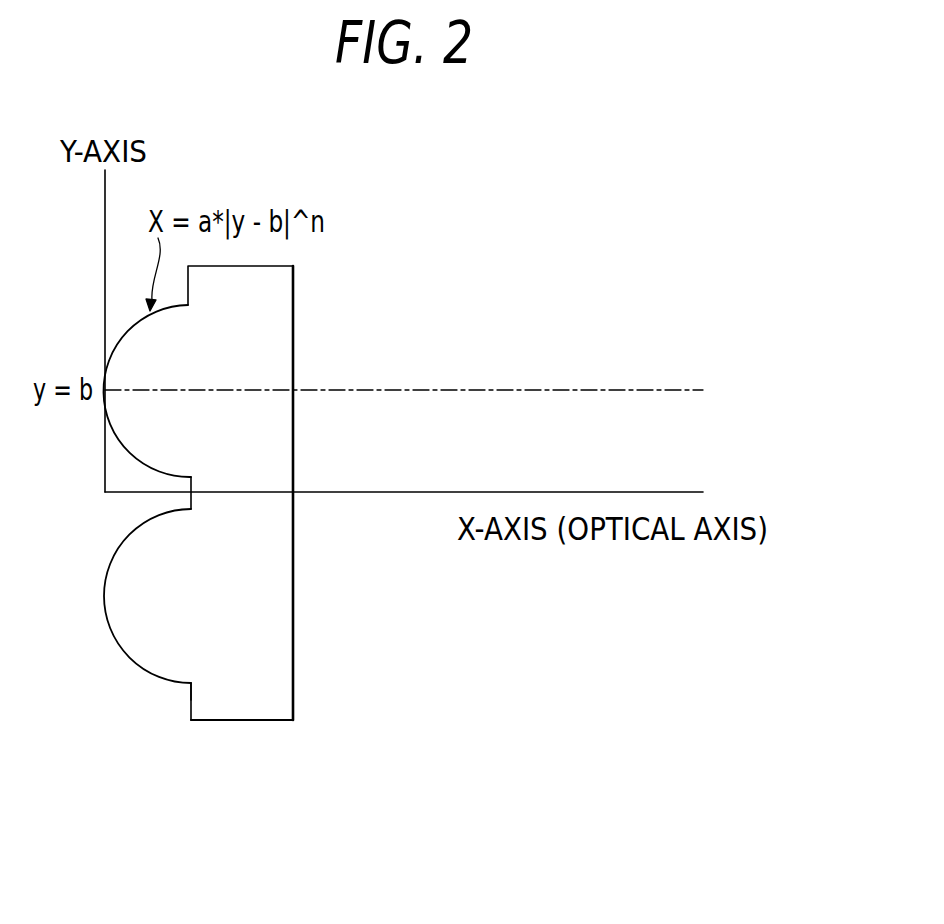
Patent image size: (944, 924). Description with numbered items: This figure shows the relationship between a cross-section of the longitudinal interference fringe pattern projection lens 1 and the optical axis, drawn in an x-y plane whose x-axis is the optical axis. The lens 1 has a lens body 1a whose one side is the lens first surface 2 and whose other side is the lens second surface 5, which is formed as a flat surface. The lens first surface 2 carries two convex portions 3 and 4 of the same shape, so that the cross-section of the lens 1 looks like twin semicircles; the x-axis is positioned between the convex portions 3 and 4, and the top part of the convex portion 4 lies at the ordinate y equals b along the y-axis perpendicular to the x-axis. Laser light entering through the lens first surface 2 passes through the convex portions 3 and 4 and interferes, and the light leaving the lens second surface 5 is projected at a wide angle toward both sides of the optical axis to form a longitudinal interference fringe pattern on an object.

The lens 1 is at (225, 529).
The lens body 1a is at (248, 712).
The lens first surface 2 is at (190, 700).
The convex portion 3 is at (104, 597).
The convex portion 4 is at (128, 332).
The lens second surface 5 is at (295, 607).